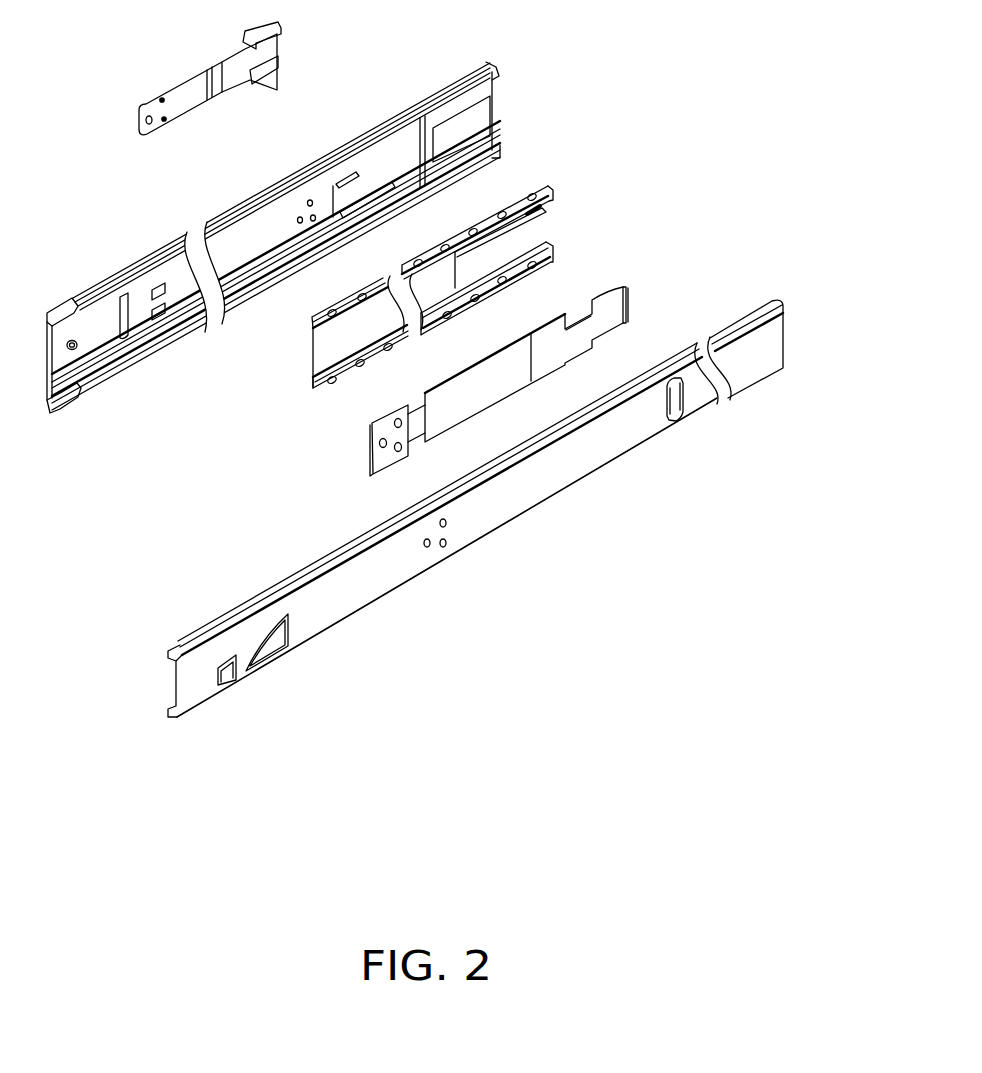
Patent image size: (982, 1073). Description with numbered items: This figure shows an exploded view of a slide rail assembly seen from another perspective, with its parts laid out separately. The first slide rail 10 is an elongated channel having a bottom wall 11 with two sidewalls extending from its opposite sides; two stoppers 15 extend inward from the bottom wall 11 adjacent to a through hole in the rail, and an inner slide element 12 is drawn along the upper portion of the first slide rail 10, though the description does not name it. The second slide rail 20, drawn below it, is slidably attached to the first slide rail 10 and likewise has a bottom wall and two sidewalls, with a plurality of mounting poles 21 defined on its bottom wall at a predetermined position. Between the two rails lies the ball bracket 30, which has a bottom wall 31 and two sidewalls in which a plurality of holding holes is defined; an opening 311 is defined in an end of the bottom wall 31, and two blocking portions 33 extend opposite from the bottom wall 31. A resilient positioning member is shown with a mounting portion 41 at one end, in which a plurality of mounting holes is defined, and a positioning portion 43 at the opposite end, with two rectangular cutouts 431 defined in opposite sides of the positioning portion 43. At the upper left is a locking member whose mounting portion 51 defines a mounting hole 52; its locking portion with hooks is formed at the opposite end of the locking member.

The first slide rail 10 is at (458, 95).
The bottom wall 11 is at (472, 118).
The inner slide member 12 is at (412, 150).
The stoppers 15 is at (337, 178).
The second slide rail 20 is at (357, 584).
The mounting poles 21 is at (447, 548).
The ball bracket 30 is at (518, 220).
The bottom wall 31 is at (443, 280).
The opening 311 is at (513, 243).
The blocking portions 33 is at (541, 208).
The mounting portion 41 is at (370, 432).
The positioning portion 43 is at (615, 310).
The rectangular cutouts 431 is at (577, 310).
The mounting portion 51 is at (159, 120).
The mounting hole 52 is at (150, 126).